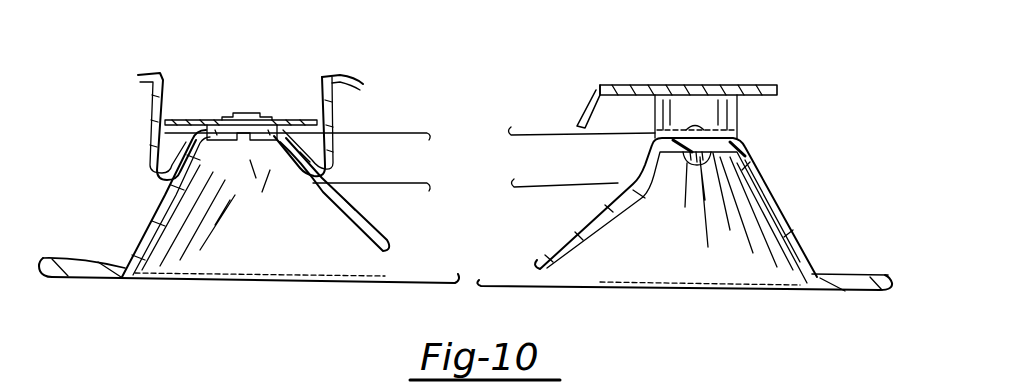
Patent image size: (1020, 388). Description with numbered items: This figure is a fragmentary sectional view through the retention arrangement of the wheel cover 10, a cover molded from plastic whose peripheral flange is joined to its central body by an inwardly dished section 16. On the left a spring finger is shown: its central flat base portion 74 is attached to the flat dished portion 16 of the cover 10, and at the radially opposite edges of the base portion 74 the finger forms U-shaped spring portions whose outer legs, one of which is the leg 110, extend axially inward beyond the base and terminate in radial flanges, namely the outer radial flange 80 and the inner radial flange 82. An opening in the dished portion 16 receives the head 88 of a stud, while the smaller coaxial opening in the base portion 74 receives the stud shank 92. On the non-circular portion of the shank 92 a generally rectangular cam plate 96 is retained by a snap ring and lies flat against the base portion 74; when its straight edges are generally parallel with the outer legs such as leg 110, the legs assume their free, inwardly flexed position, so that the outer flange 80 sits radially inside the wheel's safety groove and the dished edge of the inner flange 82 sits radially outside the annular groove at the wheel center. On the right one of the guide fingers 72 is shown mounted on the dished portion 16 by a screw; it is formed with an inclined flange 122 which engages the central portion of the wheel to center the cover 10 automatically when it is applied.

The wheel cover 10 is at (588, 238).
The dished section 16 is at (672, 145).
The guide finger 72 is at (712, 86).
The base portion 74 is at (290, 145).
The outer radial flange 80 is at (158, 73).
The inner radial flange 82 is at (343, 74).
The head of stud 88 is at (232, 142).
The shank of stud 92 is at (278, 68).
The cam plate 96 is at (190, 120).
The outer leg of spring portion 110 is at (334, 110).
The inclined flange 122 is at (590, 112).